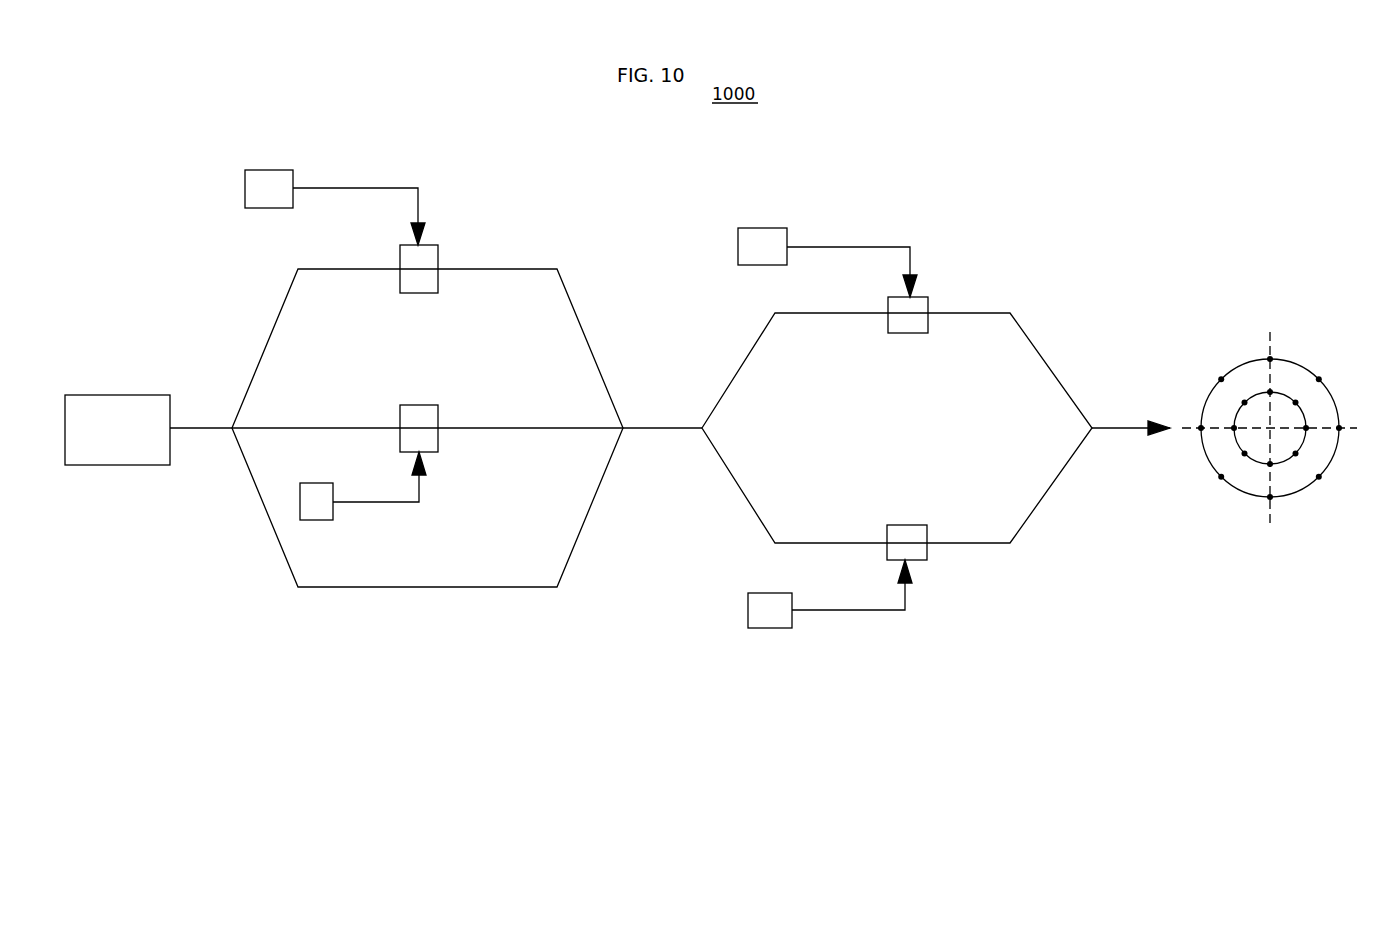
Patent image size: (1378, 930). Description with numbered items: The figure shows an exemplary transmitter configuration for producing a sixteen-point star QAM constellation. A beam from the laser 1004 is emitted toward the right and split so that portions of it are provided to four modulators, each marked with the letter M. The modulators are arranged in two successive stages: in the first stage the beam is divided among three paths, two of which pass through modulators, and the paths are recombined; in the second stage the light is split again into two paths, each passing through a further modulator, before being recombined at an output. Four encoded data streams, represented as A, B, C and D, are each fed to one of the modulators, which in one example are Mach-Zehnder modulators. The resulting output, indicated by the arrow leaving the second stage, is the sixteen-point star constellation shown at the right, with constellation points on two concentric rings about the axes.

The laser 1004 is at (137, 395).